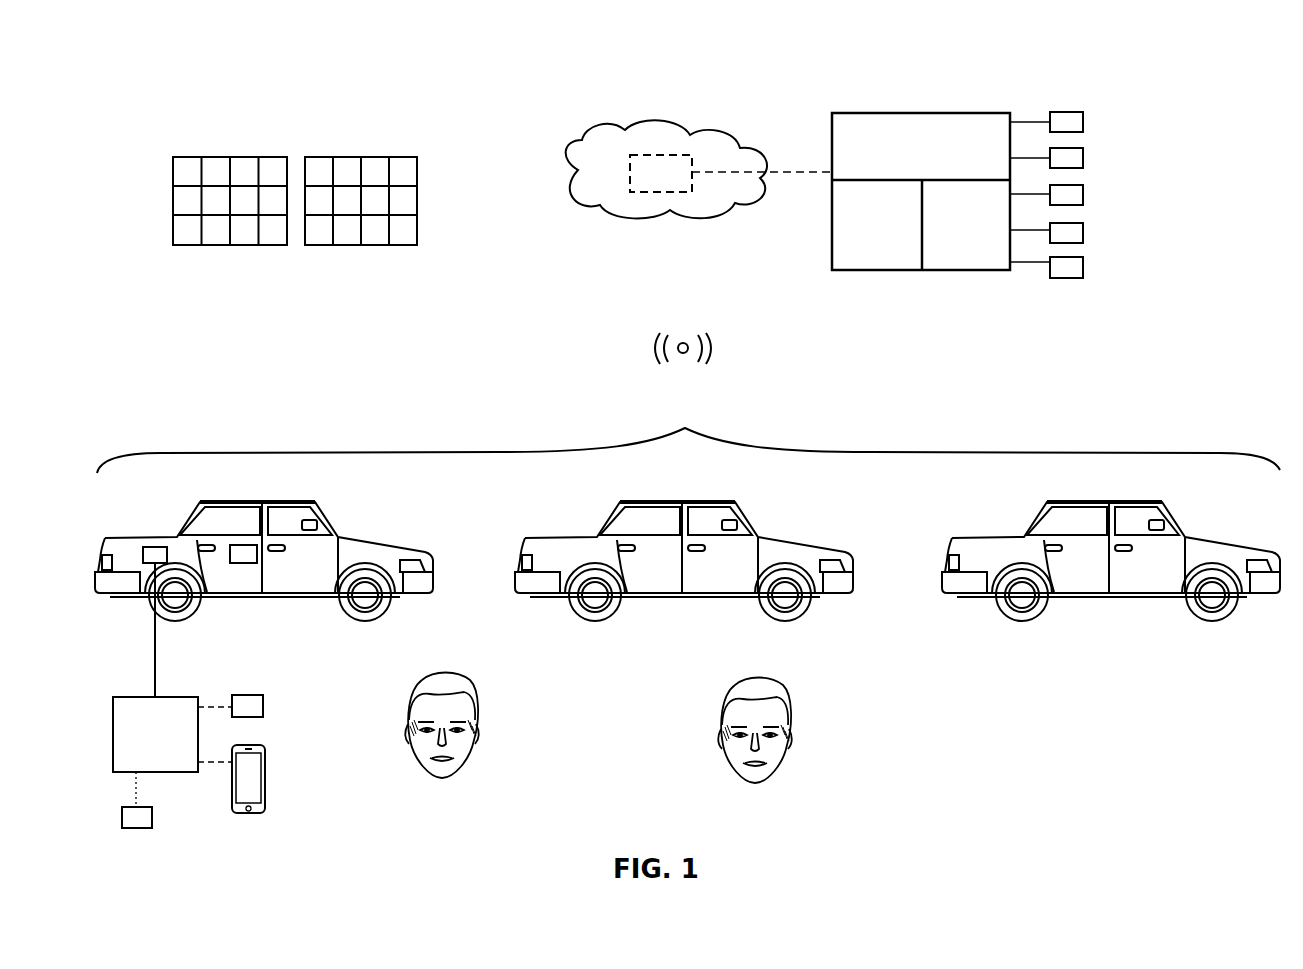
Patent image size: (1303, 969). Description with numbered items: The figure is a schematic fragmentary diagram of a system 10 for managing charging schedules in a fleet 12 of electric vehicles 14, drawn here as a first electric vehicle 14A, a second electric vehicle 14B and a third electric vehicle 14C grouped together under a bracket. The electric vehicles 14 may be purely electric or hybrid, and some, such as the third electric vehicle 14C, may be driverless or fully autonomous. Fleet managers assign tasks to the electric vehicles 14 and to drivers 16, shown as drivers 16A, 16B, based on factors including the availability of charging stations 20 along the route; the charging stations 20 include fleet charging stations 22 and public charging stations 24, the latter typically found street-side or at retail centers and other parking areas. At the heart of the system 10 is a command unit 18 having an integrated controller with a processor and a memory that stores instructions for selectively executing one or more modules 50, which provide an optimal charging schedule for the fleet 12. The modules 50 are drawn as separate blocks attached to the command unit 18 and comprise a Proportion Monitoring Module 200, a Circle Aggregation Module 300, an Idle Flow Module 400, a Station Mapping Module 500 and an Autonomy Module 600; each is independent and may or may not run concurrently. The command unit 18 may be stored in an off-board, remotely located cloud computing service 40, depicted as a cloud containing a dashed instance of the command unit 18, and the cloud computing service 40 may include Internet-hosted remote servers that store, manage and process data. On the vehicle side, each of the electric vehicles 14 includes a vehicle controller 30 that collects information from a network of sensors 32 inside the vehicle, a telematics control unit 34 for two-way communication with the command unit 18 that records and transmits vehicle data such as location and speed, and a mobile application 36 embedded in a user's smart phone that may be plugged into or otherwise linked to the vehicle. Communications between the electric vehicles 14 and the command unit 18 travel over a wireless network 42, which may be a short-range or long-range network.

The system 10 is at (820, 166).
The fleet 12 is at (985, 390).
The electric vehicles 14 is at (244, 546).
The first electric vehicle 14A is at (131, 505).
The second electric vehicle 14B is at (770, 503).
The third electric vehicle 14C is at (1192, 507).
The drivers 16 is at (558, 709).
The driver 16A is at (400, 667).
The driver 16B is at (713, 676).
The command unit 18 is at (663, 155).
The charging stations 20 is at (295, 155).
The fleet charging stations 22 is at (228, 150).
The public charging stations 24 is at (390, 150).
The vehicle controllers 30 is at (185, 697).
The sensors 32 is at (140, 828).
The telematics control unit 34 is at (263, 710).
The mobile application 36 is at (265, 780).
The cloud computing service 40 is at (577, 118).
The wireless network 42 is at (712, 320).
The modules 50 is at (1133, 178).
The Proportion Monitoring Module 200 is at (1083, 122).
The Circle Aggregation Module 300 is at (1083, 158).
The Idle Flow Module 400 is at (1083, 195).
The Station Mapping Module 500 is at (1083, 233).
The Autonomy Module 600 is at (1083, 268).